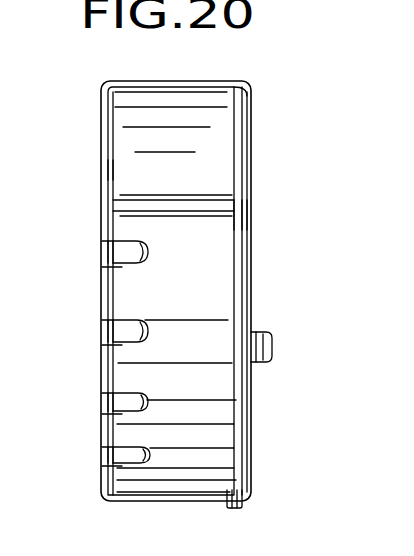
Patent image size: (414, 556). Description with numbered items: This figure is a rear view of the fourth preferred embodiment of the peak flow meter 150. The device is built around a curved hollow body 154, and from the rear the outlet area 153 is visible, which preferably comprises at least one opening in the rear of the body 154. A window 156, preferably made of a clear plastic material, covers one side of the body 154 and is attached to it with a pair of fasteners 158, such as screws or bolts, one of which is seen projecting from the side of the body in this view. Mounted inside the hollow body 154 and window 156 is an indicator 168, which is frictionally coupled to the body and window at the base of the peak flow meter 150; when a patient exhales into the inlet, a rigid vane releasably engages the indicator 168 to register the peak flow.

The peak flow meter 150 is at (284, 104).
The outlet area 153 is at (108, 268).
The curved hollow body 154 is at (121, 168).
The window 156 is at (247, 215).
The fasteners 158 is at (272, 342).
The indicator 168 is at (243, 506).